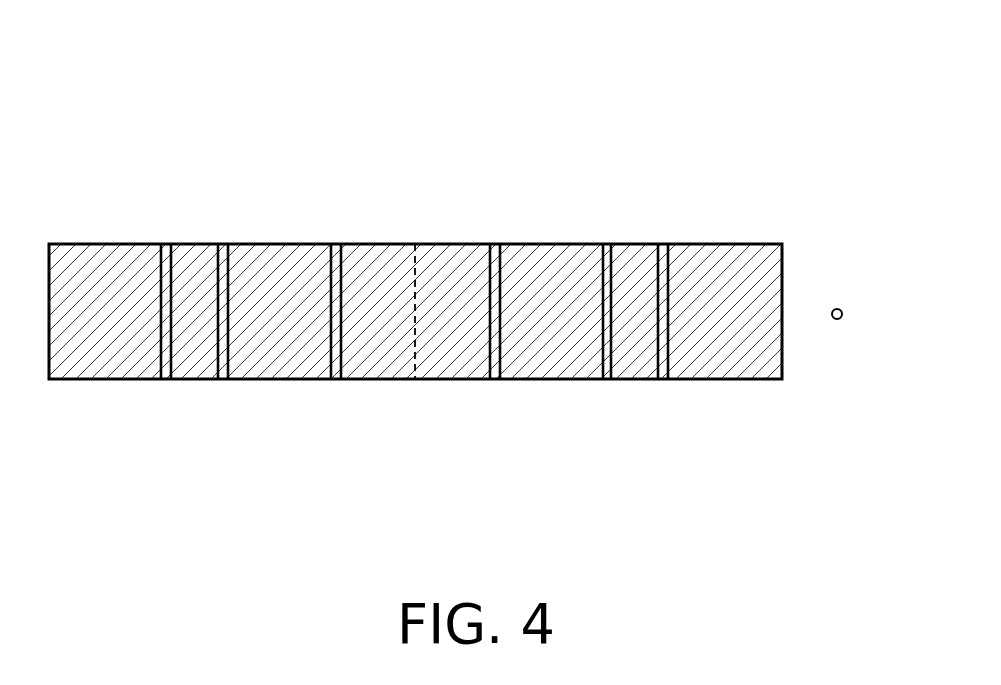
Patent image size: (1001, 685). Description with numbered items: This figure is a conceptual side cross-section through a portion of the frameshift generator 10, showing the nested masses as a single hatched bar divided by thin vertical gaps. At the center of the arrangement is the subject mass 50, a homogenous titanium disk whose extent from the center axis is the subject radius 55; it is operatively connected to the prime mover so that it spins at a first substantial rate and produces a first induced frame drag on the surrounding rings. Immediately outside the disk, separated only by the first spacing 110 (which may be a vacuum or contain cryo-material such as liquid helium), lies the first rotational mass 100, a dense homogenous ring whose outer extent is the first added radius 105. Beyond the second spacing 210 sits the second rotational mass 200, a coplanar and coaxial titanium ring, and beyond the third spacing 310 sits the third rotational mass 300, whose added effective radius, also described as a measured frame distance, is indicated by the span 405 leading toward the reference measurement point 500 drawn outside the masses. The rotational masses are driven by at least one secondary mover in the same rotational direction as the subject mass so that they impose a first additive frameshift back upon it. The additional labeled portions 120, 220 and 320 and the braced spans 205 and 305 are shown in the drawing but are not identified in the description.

The frameshift generator 10 is at (174, 70).
The third rotational mass 300 is at (97, 243).
The third spacing 310 is at (167, 380).
The second rotational mass 200 is at (197, 243).
The second spacing 210 is at (222, 380).
The first rotational mass 100 is at (280, 243).
The first spacing 110 is at (333, 380).
The subject mass 50 is at (377, 243).
The subject radius 55 is at (413, 405).
The first layer portion 120 is at (543, 262).
The first added radius 105 is at (602, 405).
The second layer portion 220 is at (632, 262).
The second layer region 205 is at (610, 405).
The third layer portion 320 is at (767, 275).
The third layer region 305 is at (780, 405).
The reference measurement point 500 is at (842, 312).
The added effective radius 405 is at (788, 405).